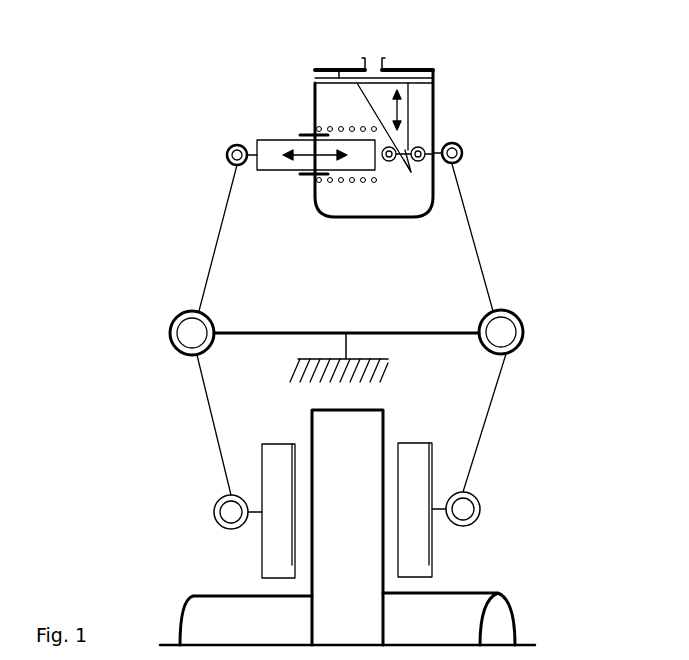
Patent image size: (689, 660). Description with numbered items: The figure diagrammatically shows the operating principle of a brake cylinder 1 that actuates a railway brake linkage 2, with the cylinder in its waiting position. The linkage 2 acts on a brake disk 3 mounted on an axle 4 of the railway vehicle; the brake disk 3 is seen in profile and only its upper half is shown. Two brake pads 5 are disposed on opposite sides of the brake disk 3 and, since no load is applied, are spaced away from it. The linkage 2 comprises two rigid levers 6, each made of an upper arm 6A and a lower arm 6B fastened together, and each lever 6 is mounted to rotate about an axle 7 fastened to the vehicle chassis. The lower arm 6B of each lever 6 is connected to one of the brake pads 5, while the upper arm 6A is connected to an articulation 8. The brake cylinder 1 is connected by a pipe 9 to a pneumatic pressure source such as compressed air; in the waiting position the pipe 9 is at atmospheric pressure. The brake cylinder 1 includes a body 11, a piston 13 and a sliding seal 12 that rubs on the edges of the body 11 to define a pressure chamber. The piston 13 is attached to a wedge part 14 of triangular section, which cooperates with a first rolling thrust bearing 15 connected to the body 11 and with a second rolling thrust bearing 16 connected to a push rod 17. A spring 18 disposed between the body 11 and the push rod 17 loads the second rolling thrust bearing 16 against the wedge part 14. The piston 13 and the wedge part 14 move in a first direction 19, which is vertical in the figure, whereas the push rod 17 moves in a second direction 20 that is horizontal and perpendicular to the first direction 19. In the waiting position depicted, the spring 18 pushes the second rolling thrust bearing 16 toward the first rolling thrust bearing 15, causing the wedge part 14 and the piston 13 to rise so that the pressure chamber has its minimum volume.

The brake cylinder 1 is at (463, 114).
The railway brake linkage 2 is at (186, 254).
The brake disk 3 is at (354, 618).
The axle 4 is at (473, 606).
The brake pads 5 is at (273, 452).
The rigid levers 6 is at (122, 349).
The upper arm 6A is at (215, 214).
The lower arm 6B is at (210, 420).
The axle 7 is at (182, 332).
The articulation 8 is at (227, 158).
The pipe 9 is at (372, 60).
The body 11 is at (315, 78).
The sliding seal 12 is at (433, 70).
The piston 13 is at (339, 70).
The wedge part 14 is at (410, 175).
The first rolling thrust bearing 15 is at (418, 162).
The second rolling thrust bearing 16 is at (389, 162).
The push rod 17 is at (268, 172).
The spring 18 is at (351, 182).
The first direction 19 is at (402, 108).
The second direction 20 is at (300, 152).